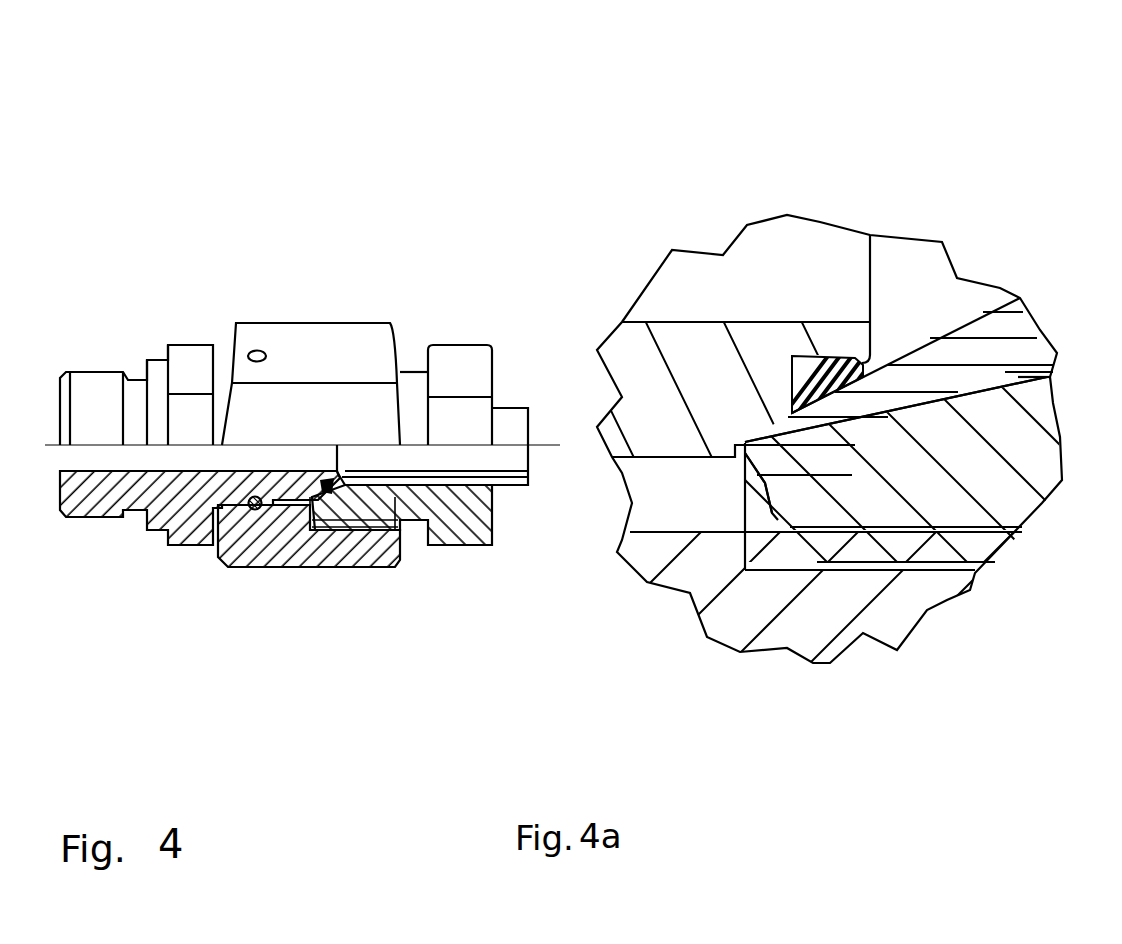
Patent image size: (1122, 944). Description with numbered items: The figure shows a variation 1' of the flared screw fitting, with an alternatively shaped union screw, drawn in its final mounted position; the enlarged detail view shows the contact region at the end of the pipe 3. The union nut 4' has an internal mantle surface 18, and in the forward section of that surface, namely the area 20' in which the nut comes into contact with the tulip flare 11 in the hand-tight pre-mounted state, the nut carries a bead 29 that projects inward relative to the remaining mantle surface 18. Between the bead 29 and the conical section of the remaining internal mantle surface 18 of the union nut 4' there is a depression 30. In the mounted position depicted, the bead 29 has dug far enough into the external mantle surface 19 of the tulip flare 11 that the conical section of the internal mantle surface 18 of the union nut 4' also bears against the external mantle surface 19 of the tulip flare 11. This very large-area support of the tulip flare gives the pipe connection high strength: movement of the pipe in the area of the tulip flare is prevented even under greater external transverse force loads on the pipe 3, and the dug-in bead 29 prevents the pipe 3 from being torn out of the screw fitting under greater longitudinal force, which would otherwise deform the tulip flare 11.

In FIG. 4, the flared screw fitting variation 1' is at (302, 560).
In FIG. 4A, the flared screw fitting variation 1' is at (829, 355).
In FIG. 4A, the pipe 3 is at (1017, 300).
In FIG. 4A, the union nut 4' is at (833, 606).
In FIG. 4A, the tulip flare 11 is at (936, 272).
In FIG. 4A, the internal mantle surface 18 is at (948, 392).
In FIG. 4A, the external mantle surface 19 is at (898, 440).
In FIG. 4A, the area 20' is at (792, 255).
In FIG. 4A, the bead 29 is at (785, 487).
In FIG. 4A, the depression 30 is at (840, 465).